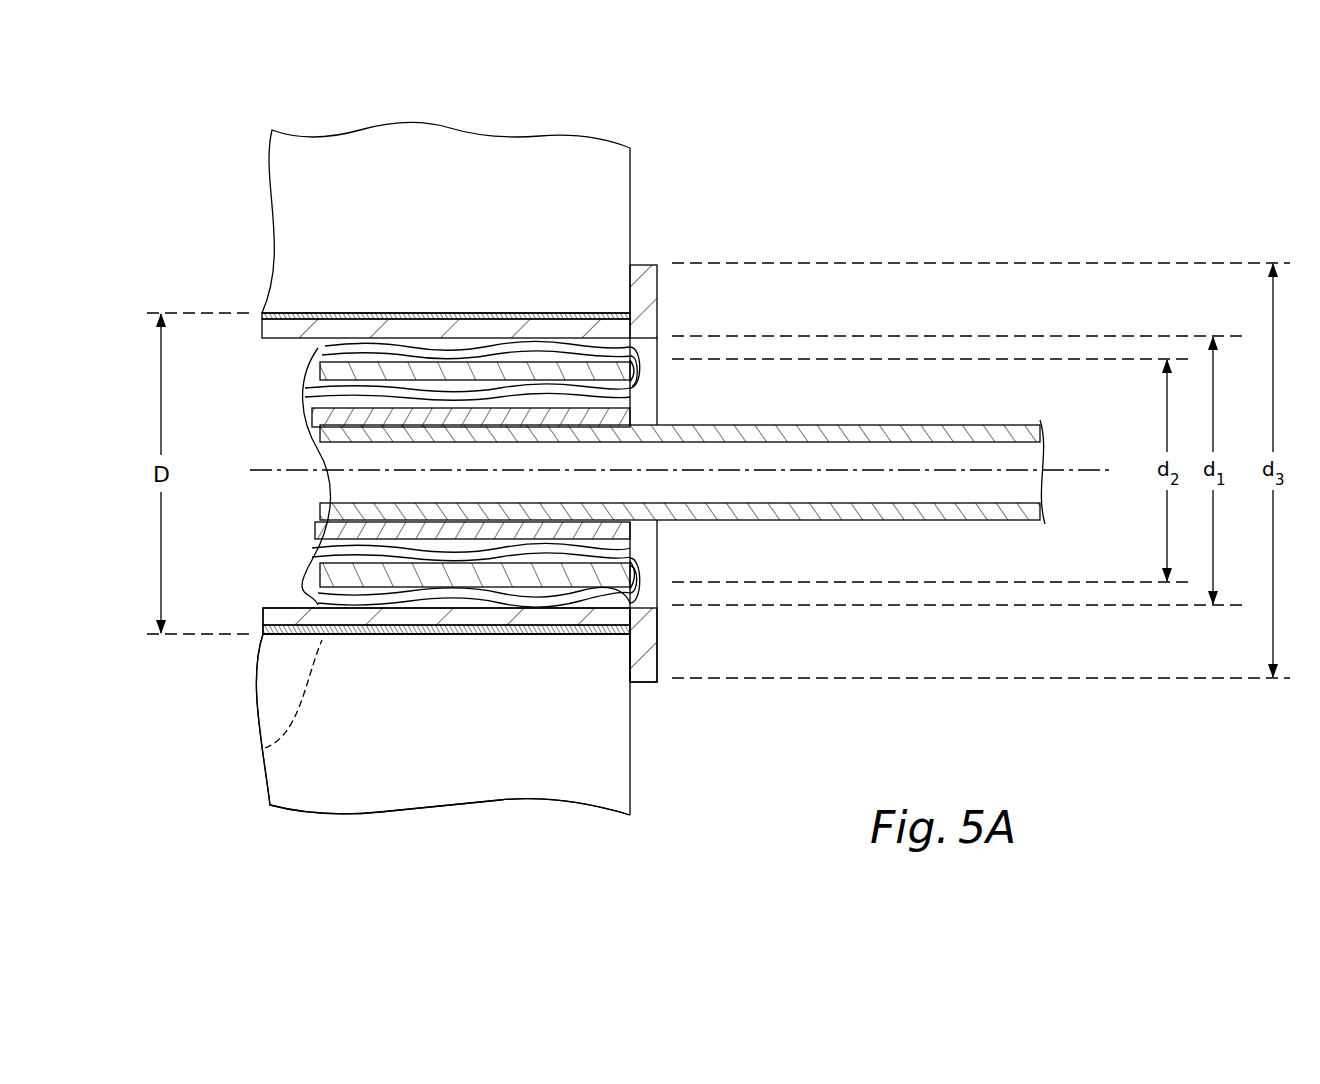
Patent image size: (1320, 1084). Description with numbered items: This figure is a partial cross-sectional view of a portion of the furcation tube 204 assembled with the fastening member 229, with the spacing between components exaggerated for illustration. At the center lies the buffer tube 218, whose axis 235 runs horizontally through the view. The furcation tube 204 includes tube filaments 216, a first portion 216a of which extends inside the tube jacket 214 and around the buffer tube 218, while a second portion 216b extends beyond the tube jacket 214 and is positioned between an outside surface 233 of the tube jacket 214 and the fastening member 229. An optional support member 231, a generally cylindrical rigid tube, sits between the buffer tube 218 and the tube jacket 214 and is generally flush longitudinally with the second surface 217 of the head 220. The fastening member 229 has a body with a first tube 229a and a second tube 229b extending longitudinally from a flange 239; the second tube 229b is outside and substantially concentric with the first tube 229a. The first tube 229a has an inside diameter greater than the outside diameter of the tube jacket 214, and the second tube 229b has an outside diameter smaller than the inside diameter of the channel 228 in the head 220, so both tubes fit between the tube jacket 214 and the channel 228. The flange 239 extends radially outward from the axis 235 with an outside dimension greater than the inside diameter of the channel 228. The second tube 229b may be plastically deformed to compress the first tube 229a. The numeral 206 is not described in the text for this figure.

The furcation tube 204 is at (254, 592).
The housing member 206 is at (503, 838).
The tube jacket 214 is at (318, 372).
The tube filaments 216 is at (459, 451).
The first portion of the tube filaments 216a is at (312, 406).
The second portion of the tube filaments 216b is at (528, 345).
The second surface of the head 217 is at (632, 177).
The buffer tube 218 is at (998, 425).
The head 220 is at (507, 150).
The channel 228 is at (265, 748).
The fastening member 229 is at (509, 462).
The first tube 229a is at (358, 313).
The second tube 229b is at (469, 326).
The support member 231 is at (633, 526).
The outside surface of the tube jacket 233 is at (613, 590).
The axis of the buffer tube 235 is at (1098, 474).
The flange 239 is at (658, 303).